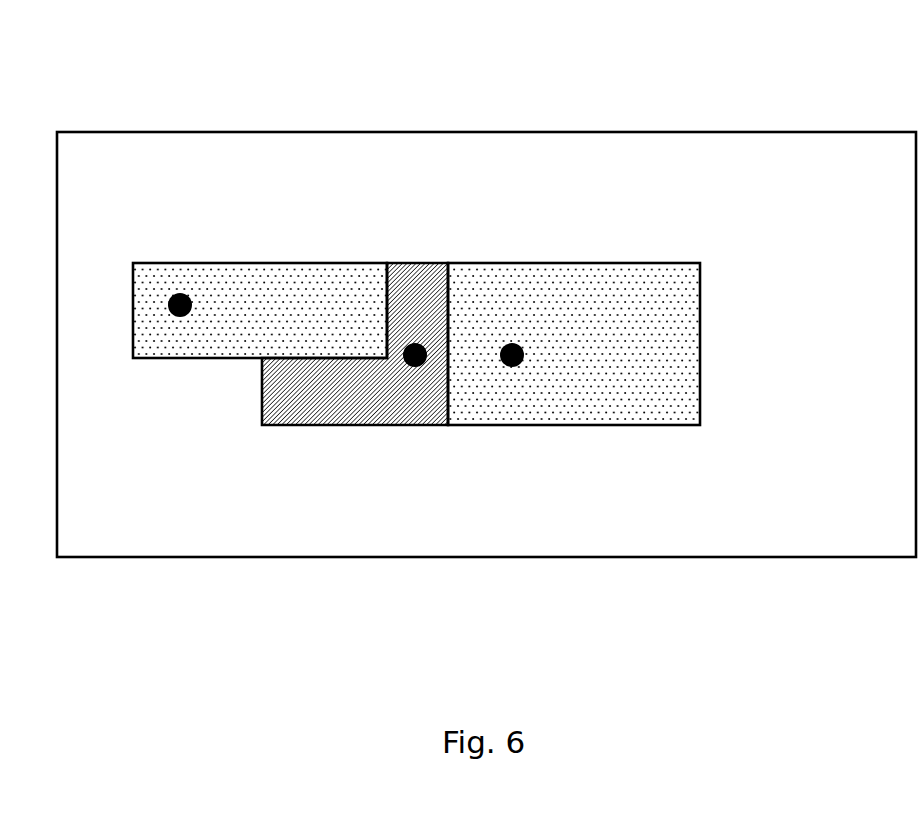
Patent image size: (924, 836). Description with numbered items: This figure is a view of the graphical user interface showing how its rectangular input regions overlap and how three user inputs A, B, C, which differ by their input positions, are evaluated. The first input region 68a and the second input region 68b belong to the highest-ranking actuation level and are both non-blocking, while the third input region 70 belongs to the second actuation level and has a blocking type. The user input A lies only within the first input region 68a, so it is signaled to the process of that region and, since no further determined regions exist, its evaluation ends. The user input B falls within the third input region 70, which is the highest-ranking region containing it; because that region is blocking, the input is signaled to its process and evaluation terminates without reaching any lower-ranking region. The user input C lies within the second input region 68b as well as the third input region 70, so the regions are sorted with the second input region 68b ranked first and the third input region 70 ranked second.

The first input region 68a is at (232, 298).
The second input region 68b is at (600, 297).
The third input region 70 is at (416, 290).
The user input A is at (181, 316).
The user input B is at (416, 367).
The user input C is at (513, 367).